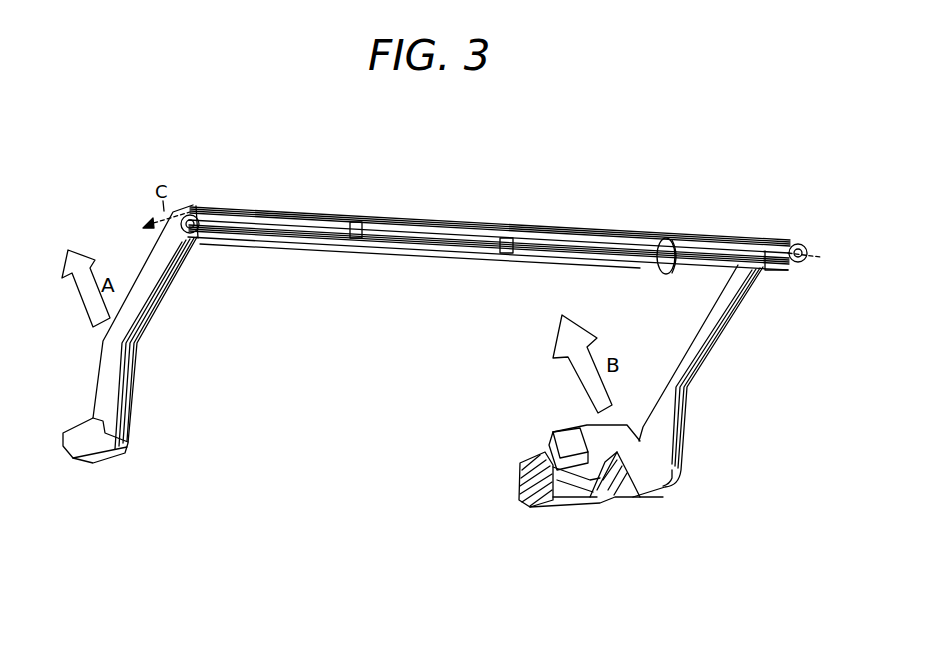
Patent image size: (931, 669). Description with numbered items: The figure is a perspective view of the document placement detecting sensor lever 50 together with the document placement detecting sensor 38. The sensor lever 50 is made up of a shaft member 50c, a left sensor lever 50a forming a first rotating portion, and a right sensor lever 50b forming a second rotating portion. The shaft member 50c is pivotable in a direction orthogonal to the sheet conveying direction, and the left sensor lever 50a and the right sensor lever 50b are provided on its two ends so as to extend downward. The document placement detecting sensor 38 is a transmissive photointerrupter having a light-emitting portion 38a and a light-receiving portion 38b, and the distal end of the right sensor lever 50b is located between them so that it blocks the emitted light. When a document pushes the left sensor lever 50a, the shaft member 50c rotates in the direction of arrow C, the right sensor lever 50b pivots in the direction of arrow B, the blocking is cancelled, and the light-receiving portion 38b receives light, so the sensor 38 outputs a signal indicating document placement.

The document placement detecting sensor lever 50 is at (211, 185).
The left sensor lever 50a is at (153, 307).
The right sensor lever 50b is at (708, 363).
The shaft member 50c is at (542, 227).
The document placement detecting sensor 38 is at (560, 488).
The light-emitting portion 38a is at (628, 497).
The light-receiving portion 38b is at (557, 441).